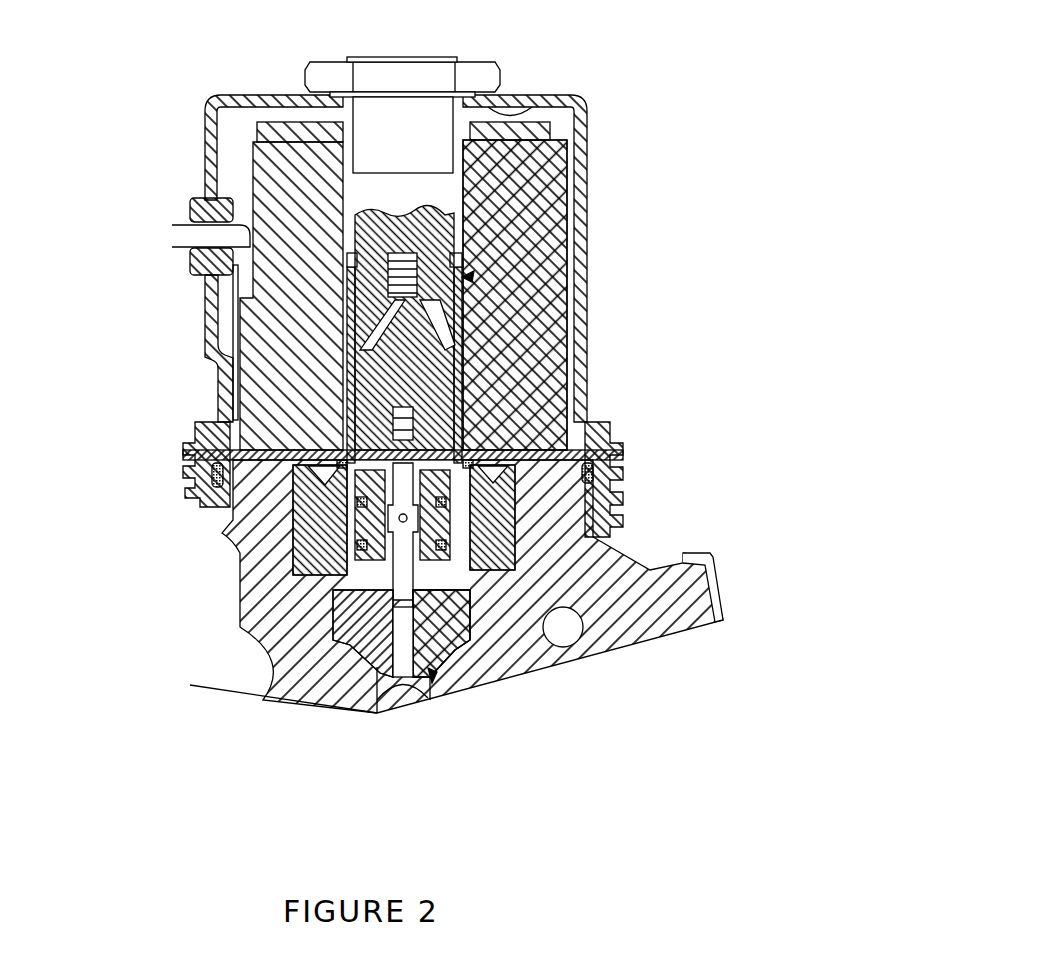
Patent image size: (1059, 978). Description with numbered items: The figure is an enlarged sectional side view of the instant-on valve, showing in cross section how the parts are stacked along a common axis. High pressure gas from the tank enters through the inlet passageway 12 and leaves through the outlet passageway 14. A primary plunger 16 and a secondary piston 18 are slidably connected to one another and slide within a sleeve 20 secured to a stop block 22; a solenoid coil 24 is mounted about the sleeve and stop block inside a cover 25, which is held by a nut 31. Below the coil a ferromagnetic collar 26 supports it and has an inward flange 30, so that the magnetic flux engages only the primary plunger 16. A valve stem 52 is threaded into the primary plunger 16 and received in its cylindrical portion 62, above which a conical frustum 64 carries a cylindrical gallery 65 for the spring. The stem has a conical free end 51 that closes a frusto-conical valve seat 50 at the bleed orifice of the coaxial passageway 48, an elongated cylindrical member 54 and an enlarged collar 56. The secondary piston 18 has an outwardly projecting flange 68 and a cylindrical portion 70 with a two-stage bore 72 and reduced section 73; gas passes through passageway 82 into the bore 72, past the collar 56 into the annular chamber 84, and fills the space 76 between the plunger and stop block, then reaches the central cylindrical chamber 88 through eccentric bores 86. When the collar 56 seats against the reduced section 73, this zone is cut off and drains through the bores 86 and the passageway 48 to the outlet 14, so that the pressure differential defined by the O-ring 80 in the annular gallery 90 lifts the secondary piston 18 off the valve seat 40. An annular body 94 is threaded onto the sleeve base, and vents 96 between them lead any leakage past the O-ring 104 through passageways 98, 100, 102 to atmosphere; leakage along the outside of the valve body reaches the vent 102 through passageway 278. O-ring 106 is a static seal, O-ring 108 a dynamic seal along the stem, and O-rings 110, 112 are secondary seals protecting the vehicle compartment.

The inlet passageway 12 is at (480, 687).
The outlet passageway 14 is at (365, 693).
The primary plunger 16 is at (462, 277).
The secondary piston 18 is at (447, 695).
The sleeve 20 is at (205, 212).
The stop block 22 is at (565, 115).
The solenoid coil 24 is at (267, 185).
The cover 25 is at (548, 98).
The collar 26 is at (605, 420).
The flange 30 is at (480, 390).
The nut 31 is at (470, 75).
The valve seat 40 is at (387, 685).
The cylindrical coaxial passageway 48 is at (400, 660).
The frusto-conical valve seat 50 is at (452, 697).
The conical free end 51 is at (300, 655).
The valve stem 52 is at (520, 272).
The elongated cylindrical member 54 is at (653, 593).
The enlarged collar 56 is at (232, 547).
The cylindrical portion 62 is at (252, 392).
The conical frustum 64 is at (462, 240).
The cylindrical gallery 65 is at (250, 210).
The outwardly projecting flange 68 is at (493, 673).
The cylindrical portion 70 is at (340, 592).
The two-stage internal concentric bore 72 is at (600, 547).
The reduced section 73 is at (470, 330).
The space 76 is at (555, 160).
The O-ring 80 is at (640, 483).
The passageway 82 is at (187, 510).
The annular chamber 84 is at (230, 420).
The eccentric bores 86 is at (623, 518).
The central cylindrical chamber 88 is at (560, 647).
The annular gallery 90 is at (196, 437).
The annular body 94 is at (610, 537).
The vents 96 is at (623, 463).
The passageway 98 is at (562, 378).
The passageway 100 is at (645, 568).
The vent 102 is at (543, 640).
The O-ring 104 is at (237, 585).
The O-ring 106 is at (235, 557).
The O-ring 108 is at (290, 598).
The O-ring 110 is at (548, 315).
The O-ring 112 is at (623, 445).
The passageway 278 is at (712, 614).